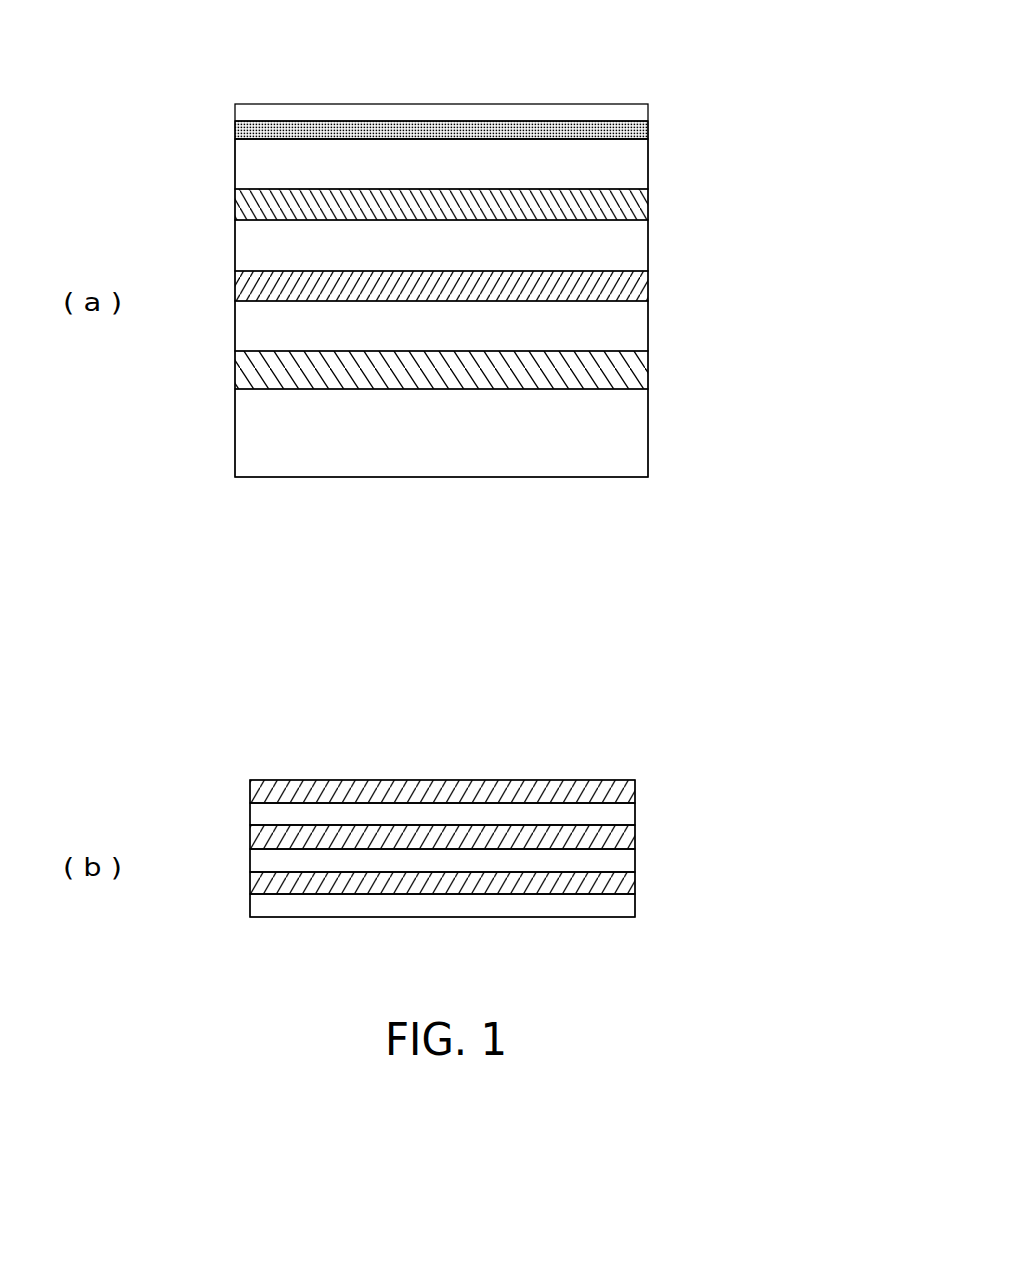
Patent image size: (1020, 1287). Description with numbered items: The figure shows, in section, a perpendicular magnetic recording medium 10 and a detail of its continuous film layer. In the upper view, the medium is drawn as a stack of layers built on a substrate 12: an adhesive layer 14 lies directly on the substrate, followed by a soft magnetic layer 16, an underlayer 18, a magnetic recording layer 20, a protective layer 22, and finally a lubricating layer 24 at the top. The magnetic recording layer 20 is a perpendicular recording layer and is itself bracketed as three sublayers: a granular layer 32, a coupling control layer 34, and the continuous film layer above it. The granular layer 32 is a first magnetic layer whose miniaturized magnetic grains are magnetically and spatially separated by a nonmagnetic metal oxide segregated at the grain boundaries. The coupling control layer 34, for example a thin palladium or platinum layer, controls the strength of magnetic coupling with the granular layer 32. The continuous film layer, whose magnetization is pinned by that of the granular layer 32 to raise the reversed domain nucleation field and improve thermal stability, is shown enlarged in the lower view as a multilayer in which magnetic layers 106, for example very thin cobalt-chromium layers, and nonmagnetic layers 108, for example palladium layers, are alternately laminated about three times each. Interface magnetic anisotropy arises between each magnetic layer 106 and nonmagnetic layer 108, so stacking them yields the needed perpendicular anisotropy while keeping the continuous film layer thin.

The magnetic recording medium 10 is at (797, 35).
The substrate 12 is at (643, 446).
The adhesive layer 14 is at (643, 370).
The soft magnetic layer 16 is at (643, 331).
The underlayer 18 is at (643, 289).
The magnetic recording layer 20 is at (495, 205).
The protective layer 22 is at (643, 130).
The lubricating layer 24 is at (643, 114).
The granular layer 32 is at (470, 245).
The coupling control layer 34 is at (643, 207).
The magnetic layer 106 is at (637, 811).
The nonmagnetic layer 108 is at (253, 790).